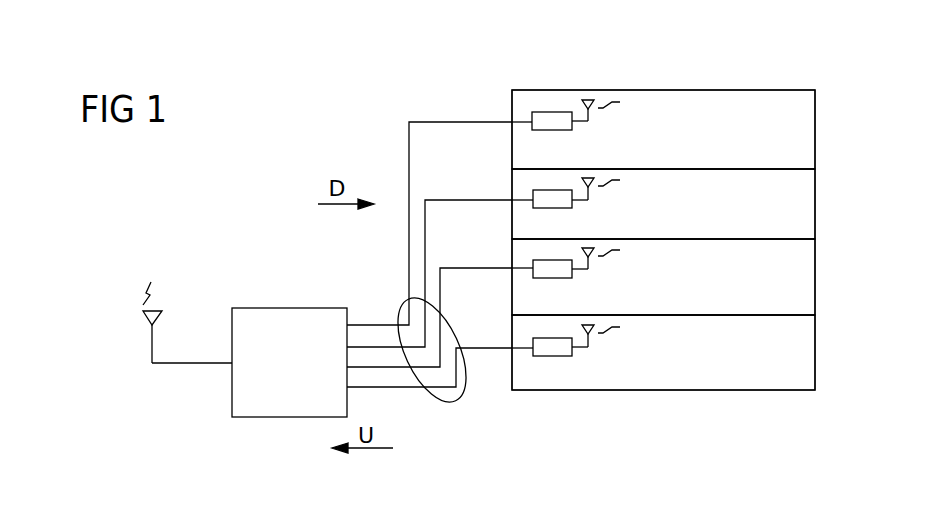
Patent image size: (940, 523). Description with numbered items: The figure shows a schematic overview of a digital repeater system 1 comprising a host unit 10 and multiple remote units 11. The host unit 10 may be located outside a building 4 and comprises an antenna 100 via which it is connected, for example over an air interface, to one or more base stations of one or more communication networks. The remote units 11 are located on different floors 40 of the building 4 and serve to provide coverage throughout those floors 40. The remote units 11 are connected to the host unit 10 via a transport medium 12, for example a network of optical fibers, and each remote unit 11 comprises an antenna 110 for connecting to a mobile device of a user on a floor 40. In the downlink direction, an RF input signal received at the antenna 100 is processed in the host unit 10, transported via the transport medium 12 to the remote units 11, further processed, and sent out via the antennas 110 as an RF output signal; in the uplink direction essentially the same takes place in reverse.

The digital repeater system 1 is at (412, 418).
The building 4 is at (700, 392).
The host unit 10 is at (280, 400).
The remote unit 11 is at (552, 118).
The transport medium 12 is at (395, 305).
The floor 40 is at (803, 128).
The antenna 100 is at (147, 318).
The antenna 110 is at (588, 100).